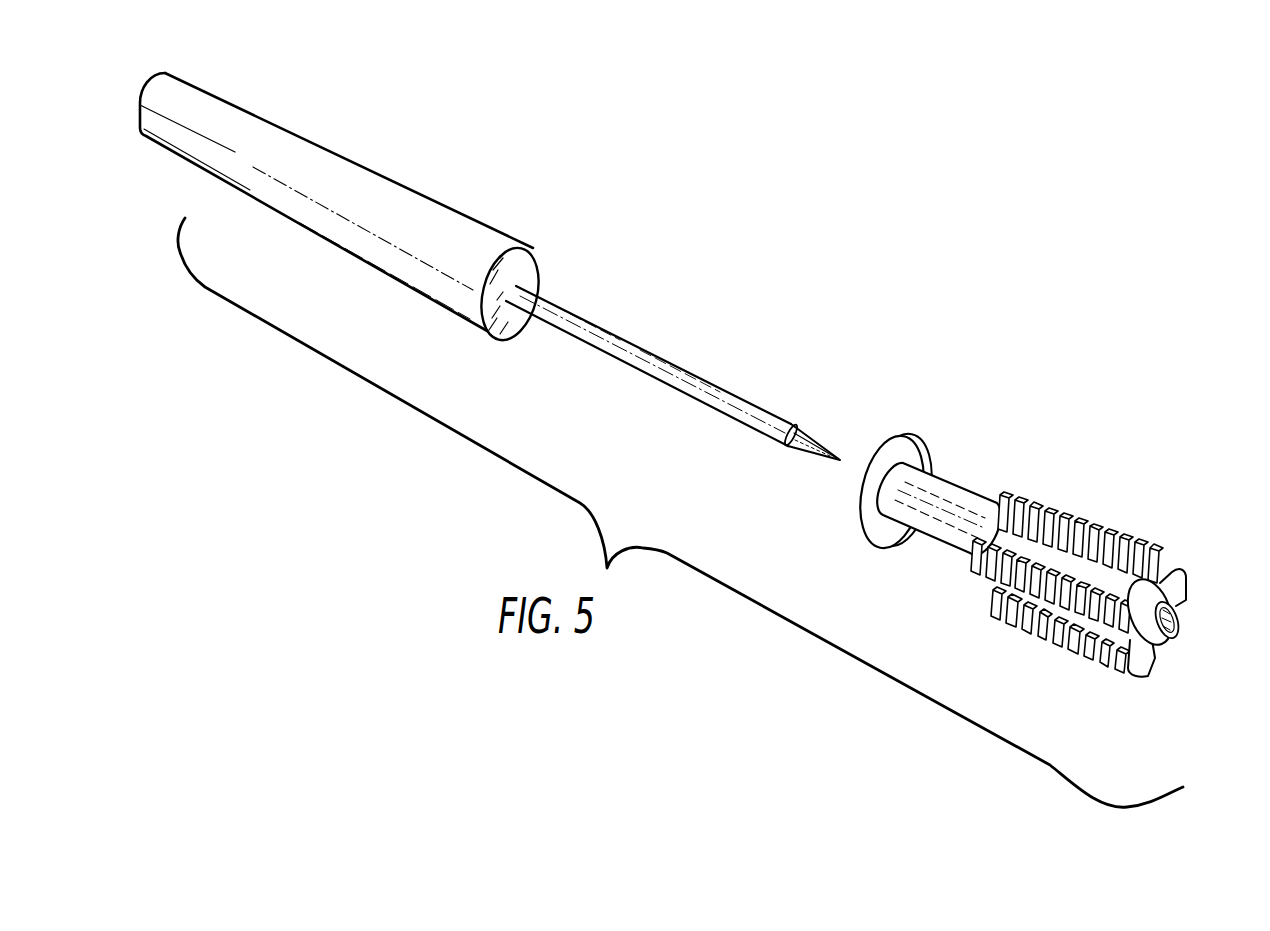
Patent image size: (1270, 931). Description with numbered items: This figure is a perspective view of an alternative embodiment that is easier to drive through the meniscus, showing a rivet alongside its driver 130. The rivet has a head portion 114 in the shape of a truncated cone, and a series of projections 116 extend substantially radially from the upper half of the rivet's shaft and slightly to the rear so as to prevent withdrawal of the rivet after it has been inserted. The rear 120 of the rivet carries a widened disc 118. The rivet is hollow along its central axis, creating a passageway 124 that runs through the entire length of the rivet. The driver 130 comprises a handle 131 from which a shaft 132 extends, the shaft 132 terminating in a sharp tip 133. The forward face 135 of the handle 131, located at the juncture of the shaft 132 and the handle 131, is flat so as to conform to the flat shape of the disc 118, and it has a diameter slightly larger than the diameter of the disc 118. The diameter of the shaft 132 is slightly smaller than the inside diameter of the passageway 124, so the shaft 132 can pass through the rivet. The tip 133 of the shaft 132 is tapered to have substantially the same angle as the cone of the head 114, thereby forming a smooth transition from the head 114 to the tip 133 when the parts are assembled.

The driver 130 is at (401, 92).
The handle 131 is at (402, 200).
The forward face 135 is at (525, 267).
The shaft 132 is at (653, 362).
The tip 133 is at (828, 455).
The rear 120 is at (887, 442).
The disc 118 is at (883, 530).
The projections 116 is at (1078, 533).
The head portion 114 is at (1147, 635).
The passageway 124 is at (1177, 635).